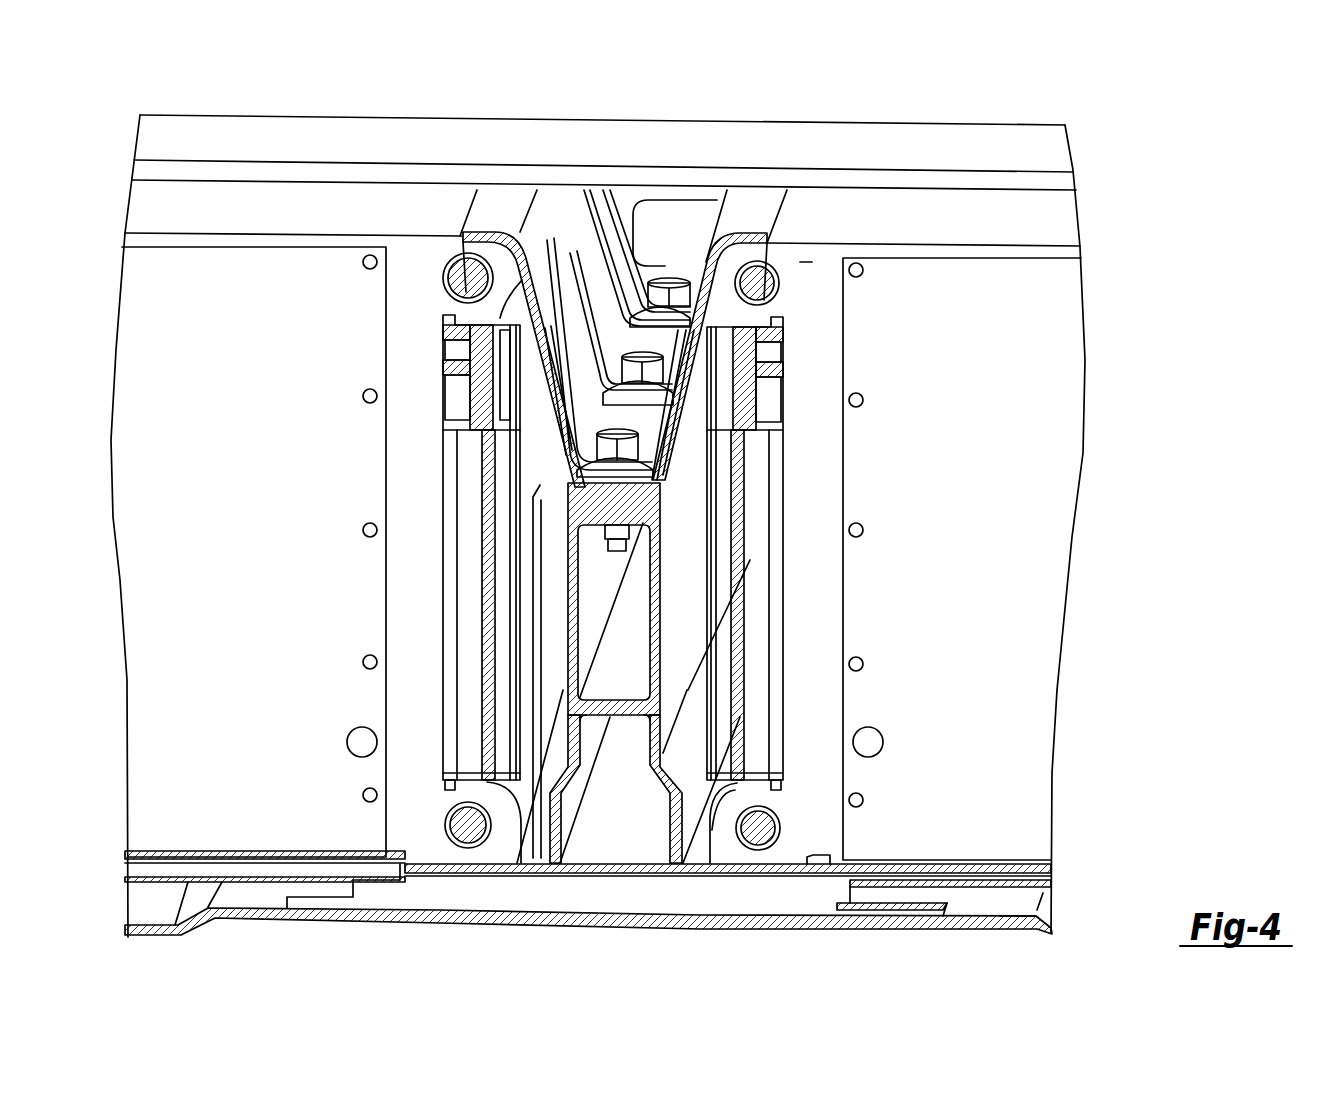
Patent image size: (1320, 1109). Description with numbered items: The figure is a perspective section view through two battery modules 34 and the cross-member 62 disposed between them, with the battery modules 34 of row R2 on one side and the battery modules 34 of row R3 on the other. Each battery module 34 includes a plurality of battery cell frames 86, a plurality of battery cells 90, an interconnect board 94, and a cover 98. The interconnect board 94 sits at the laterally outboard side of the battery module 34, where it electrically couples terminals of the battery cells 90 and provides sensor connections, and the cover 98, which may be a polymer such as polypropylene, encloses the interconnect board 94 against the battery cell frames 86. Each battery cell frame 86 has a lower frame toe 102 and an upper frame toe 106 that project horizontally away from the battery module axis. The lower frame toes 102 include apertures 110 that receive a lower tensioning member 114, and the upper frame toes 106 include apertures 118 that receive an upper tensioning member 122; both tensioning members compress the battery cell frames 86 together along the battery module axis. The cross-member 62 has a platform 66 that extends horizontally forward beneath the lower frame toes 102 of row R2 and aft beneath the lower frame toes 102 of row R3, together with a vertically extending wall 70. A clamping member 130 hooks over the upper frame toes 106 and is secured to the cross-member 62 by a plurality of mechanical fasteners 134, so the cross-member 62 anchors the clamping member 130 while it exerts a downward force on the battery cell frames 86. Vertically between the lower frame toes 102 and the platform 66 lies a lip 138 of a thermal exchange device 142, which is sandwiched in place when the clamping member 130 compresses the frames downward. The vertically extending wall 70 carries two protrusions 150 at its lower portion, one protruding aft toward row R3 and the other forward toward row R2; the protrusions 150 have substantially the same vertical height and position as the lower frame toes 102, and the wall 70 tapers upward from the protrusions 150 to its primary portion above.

The battery module 34 is at (257, 203).
The mechanical fasteners 134 is at (643, 355).
The clamping member 130 is at (740, 257).
The upper frame toe 106 is at (737, 255).
The battery cell frame 86 is at (808, 268).
The apertures 118 is at (745, 282).
The upper tensioning member 122 is at (768, 290).
The cover 98 is at (718, 462).
The cross-member 62 is at (697, 473).
The interconnect board 94 is at (760, 595).
The battery cells 90 is at (1008, 713).
The vertically extending wall 70 is at (537, 673).
The protrusions 150 is at (692, 797).
The lip 138 is at (800, 864).
The apertures 110 is at (748, 828).
The lower tensioning member 114 is at (760, 830).
The lower frame toe 102 is at (787, 857).
The platform 66 is at (782, 858).
The thermal exchange device 142 is at (993, 890).
The row R2 is at (224, 822).
The row R3 is at (958, 838).